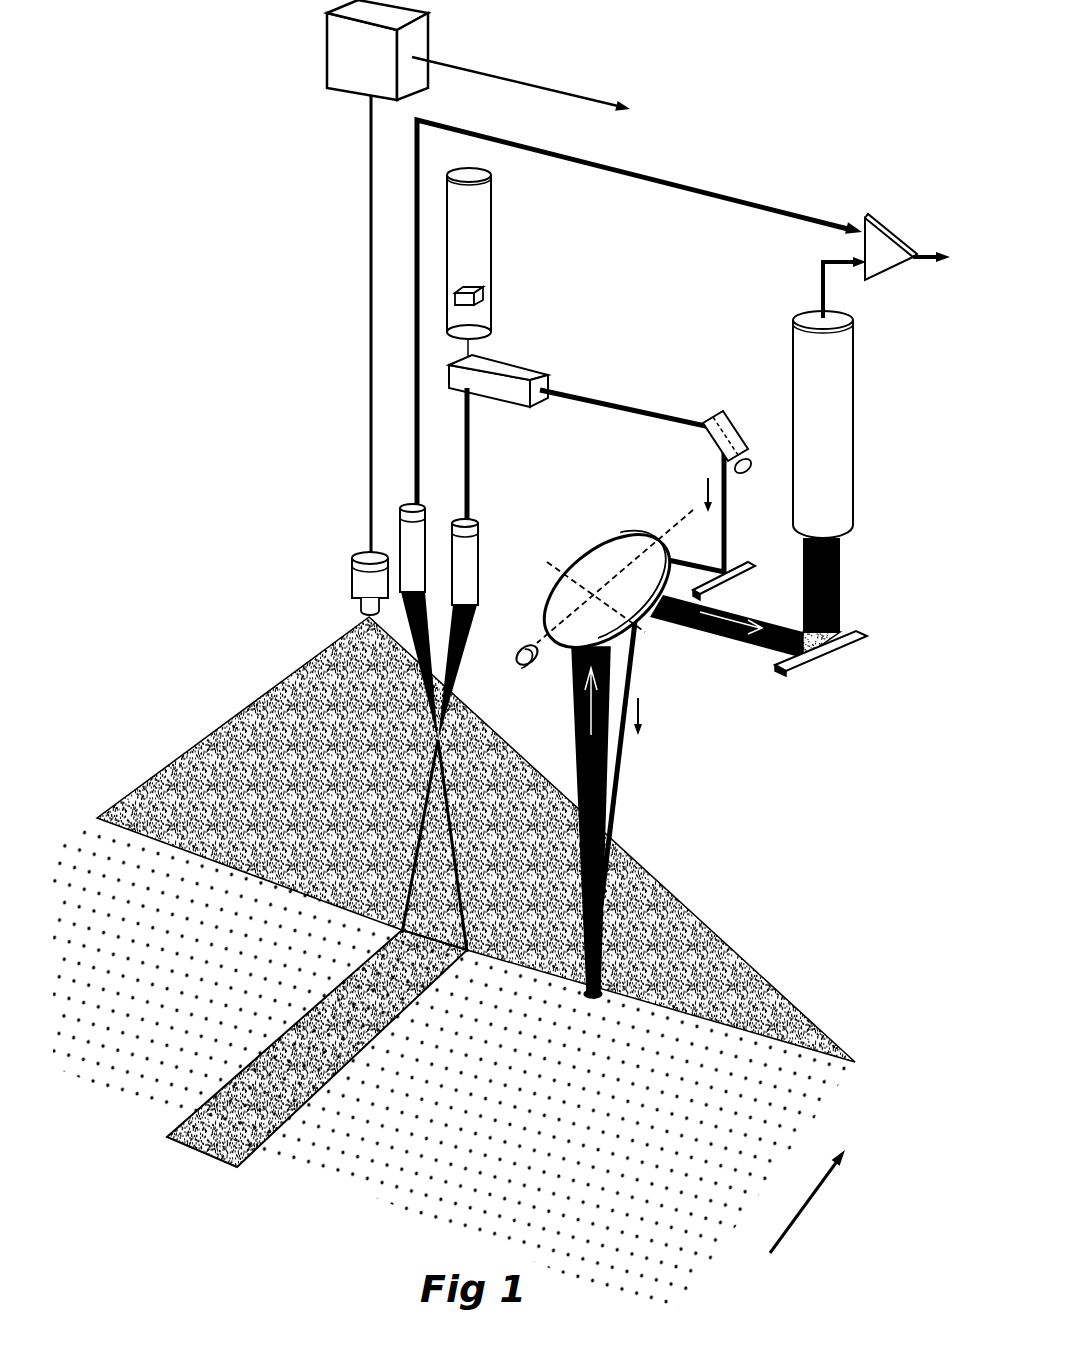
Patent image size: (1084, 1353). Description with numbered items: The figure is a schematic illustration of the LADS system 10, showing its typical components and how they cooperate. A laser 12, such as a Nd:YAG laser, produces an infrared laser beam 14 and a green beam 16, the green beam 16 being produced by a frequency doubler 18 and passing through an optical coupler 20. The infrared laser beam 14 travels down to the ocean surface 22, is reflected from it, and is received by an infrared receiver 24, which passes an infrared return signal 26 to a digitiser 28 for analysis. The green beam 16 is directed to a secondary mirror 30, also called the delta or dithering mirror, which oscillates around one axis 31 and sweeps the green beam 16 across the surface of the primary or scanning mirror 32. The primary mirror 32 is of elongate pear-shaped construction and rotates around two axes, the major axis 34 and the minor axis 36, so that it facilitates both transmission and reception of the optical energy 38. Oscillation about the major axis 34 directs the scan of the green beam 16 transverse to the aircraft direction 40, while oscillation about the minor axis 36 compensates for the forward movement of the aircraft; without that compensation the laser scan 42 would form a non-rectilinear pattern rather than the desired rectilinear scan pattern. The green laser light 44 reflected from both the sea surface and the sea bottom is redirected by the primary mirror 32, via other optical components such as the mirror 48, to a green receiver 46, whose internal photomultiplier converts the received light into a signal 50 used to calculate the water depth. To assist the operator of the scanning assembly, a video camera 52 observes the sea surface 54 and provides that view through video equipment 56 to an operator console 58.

The system 10 is at (262, 178).
The laser 12 is at (487, 262).
The infrared laser beam 14 is at (475, 480).
The green beam 16 is at (574, 395).
The frequency doubler 18 is at (487, 300).
The optical coupler 20 is at (513, 395).
The ocean surface 22 is at (780, 1010).
The infrared receiver 24 is at (410, 542).
The infrared return signal 26 is at (712, 185).
The digitiser 28 is at (885, 232).
The secondary mirror 30 is at (742, 418).
The axis 31 is at (712, 405).
The primary mirror 32 is at (557, 602).
The major axis 34 is at (672, 532).
The minor axis 36 is at (553, 570).
The optical energy 38 is at (628, 750).
The aircraft direction 40 is at (803, 1208).
The laser scan 42 is at (690, 1037).
The green laser light 44 is at (709, 632).
The green receiver 46 is at (843, 440).
The mirror 48 is at (848, 655).
The signal 50 is at (820, 296).
The video camera 52 is at (367, 580).
The sea surface 54 is at (232, 755).
The video equipment 56 is at (350, 62).
The operator console 58 is at (557, 90).